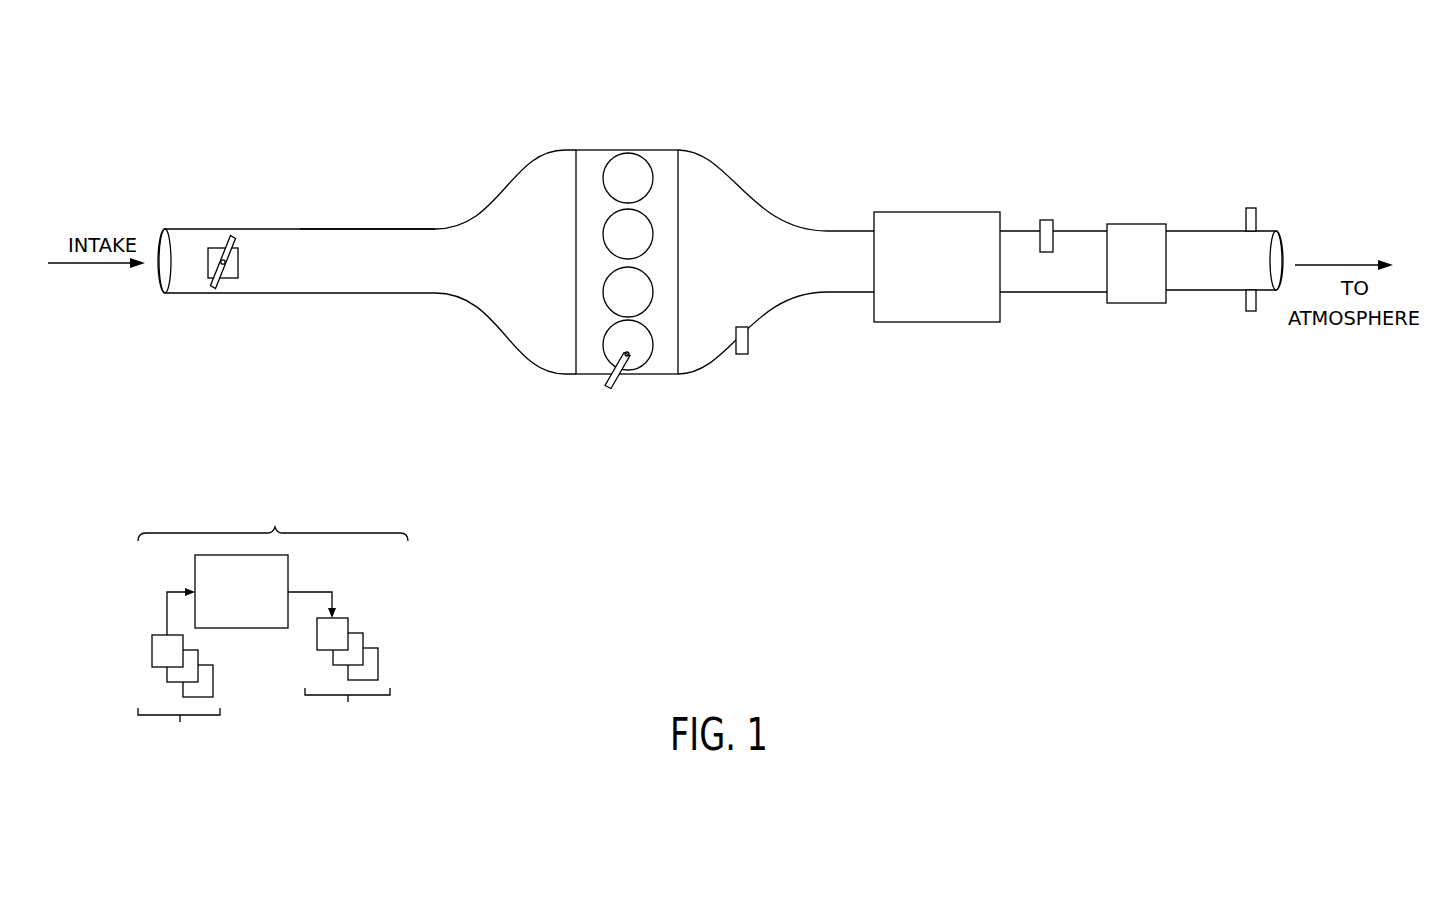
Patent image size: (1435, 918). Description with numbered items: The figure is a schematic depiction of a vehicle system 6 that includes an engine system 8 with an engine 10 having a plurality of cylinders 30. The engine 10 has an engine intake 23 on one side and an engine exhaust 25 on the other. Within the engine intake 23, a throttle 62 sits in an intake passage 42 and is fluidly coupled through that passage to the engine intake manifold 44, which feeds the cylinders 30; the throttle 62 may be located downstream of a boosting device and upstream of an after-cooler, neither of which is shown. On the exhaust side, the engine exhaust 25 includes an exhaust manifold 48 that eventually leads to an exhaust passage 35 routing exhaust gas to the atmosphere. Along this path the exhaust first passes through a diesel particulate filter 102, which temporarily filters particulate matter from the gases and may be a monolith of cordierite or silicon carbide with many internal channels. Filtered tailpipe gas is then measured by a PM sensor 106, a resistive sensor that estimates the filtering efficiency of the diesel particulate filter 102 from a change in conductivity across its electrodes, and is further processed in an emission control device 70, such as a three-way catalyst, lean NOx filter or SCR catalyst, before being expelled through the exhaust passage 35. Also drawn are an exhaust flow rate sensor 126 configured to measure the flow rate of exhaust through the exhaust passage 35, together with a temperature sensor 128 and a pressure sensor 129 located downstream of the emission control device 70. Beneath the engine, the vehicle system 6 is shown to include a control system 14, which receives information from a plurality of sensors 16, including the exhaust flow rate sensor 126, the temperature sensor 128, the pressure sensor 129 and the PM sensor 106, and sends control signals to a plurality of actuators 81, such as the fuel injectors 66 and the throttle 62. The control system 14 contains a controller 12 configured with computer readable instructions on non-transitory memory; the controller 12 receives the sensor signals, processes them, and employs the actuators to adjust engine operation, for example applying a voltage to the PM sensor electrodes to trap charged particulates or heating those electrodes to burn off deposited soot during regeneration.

The vehicle system 6 is at (104, 82).
The engine system 8 is at (672, 120).
The engine 10 is at (678, 243).
The controller 12 is at (241, 591).
The control system 14 is at (273, 509).
The sensors 16 is at (179, 676).
The engine intake 23 is at (358, 216).
The engine exhaust 25 is at (790, 198).
The cylinders 30 is at (652, 172).
The exhaust passage 35 is at (1209, 228).
The intake passage 42 is at (274, 295).
The engine intake manifold 44 is at (538, 274).
The exhaust manifold 48 is at (764, 272).
The throttle 62 is at (238, 266).
The fuel injectors 66 is at (618, 380).
The emission control device 70 is at (1148, 276).
The actuators 81 is at (339, 668).
The diesel particulate filter 102 is at (975, 303).
The PM sensor 106 is at (1042, 228).
The exhaust flow rate sensor 126 is at (748, 334).
The temperature sensor 128 is at (1246, 303).
The pressure sensor 129 is at (1246, 219).